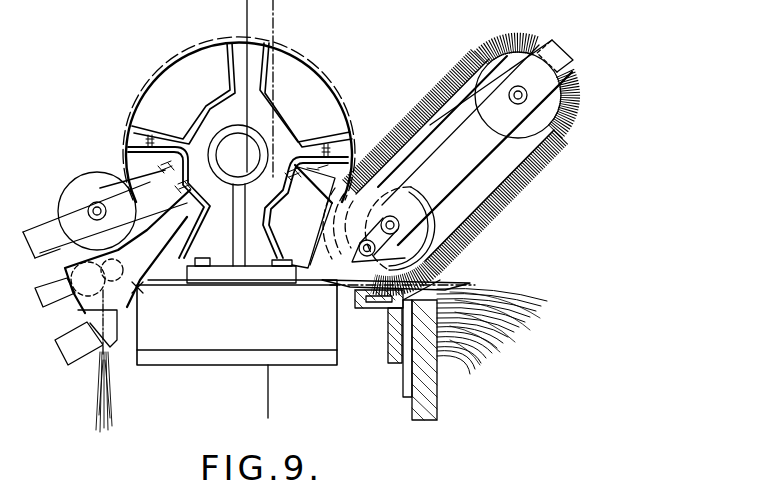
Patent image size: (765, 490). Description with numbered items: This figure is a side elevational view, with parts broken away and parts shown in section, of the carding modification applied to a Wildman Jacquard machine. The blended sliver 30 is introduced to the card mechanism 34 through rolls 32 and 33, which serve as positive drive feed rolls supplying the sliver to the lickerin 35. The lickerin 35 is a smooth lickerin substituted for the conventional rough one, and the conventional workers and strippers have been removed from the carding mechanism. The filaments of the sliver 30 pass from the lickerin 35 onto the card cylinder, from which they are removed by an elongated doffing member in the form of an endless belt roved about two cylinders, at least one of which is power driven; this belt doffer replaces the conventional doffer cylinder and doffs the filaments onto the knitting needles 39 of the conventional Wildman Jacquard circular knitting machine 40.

The sliver 30 is at (100, 400).
The roll 32 is at (67, 308).
The roll 33 is at (140, 290).
The card mechanism 34 is at (338, 66).
The lickerin 35 is at (76, 186).
The knitting needles 39 is at (390, 333).
The Wildman Jacquard circular knitting machine 40 is at (428, 374).